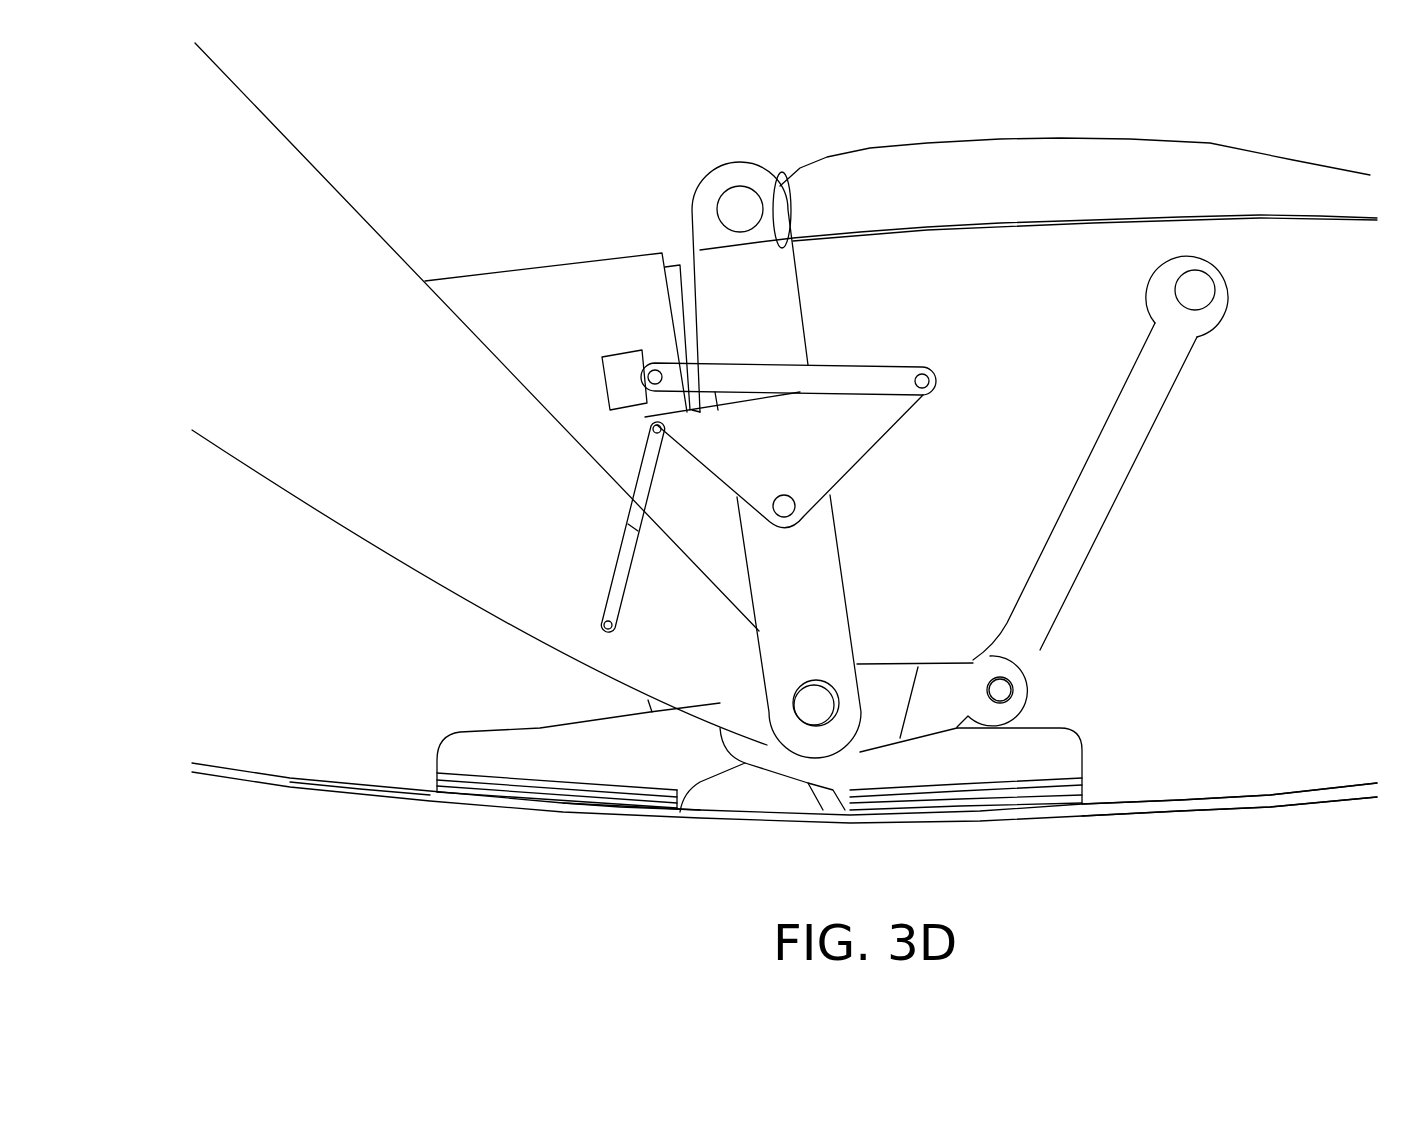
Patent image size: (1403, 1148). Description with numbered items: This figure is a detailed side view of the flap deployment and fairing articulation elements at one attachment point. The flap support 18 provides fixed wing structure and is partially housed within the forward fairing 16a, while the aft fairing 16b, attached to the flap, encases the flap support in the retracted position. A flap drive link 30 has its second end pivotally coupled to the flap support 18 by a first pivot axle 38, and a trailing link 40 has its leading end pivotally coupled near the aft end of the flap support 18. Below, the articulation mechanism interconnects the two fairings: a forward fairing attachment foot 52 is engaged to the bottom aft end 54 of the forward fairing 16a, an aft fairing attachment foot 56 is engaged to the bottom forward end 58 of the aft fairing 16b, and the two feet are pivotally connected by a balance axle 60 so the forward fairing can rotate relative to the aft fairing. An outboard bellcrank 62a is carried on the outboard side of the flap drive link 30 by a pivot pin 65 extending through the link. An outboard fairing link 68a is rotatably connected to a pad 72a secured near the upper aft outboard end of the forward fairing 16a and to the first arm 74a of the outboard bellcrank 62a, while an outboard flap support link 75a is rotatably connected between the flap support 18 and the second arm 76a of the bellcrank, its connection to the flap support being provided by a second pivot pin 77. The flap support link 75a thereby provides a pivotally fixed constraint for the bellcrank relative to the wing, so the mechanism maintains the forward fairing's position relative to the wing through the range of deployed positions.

The forward fairing 16a is at (292, 782).
The aft fairing 16b is at (1270, 795).
The flap support 18 is at (383, 425).
The flap drive link 30 is at (812, 595).
The first pivot axle 38 is at (818, 700).
The trailing link 40 is at (1087, 488).
The forward fairing attachment foot 52 is at (562, 758).
The bottom aft end 54 is at (620, 807).
The aft fairing attachment foot 56 is at (975, 765).
The bottom forward end 58 is at (920, 823).
The balance axle 60 is at (750, 743).
The outboard bellcrank 62a is at (800, 437).
The pivot pin 65 is at (783, 515).
The outboard fairing link 68a is at (797, 377).
The pad 72a is at (630, 373).
The first arm 74a is at (893, 398).
The outboard flap support link 75a is at (633, 528).
The second arm 76a is at (697, 427).
The second pivot pin 77 is at (603, 627).